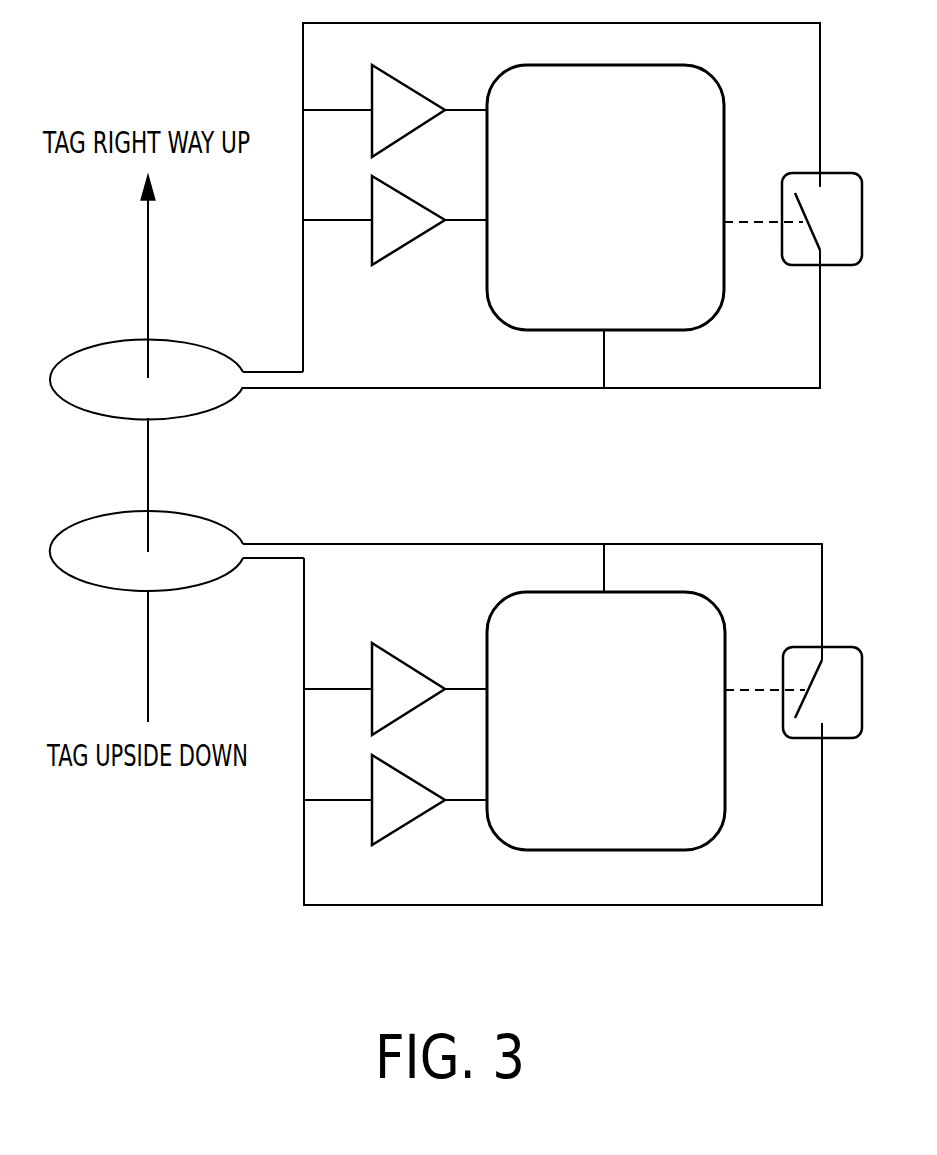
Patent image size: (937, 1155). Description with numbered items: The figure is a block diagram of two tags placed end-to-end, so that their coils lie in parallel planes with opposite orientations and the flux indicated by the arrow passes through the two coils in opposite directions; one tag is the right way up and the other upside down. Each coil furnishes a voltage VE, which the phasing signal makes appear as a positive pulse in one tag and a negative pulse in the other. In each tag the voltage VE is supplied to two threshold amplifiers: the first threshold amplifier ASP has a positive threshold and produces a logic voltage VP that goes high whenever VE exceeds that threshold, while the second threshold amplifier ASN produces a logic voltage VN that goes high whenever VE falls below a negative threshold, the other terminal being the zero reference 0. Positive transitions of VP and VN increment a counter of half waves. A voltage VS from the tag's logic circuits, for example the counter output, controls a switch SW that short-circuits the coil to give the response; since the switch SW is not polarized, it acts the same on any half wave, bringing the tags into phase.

The ground/zero reference terminal 0 is at (604, 461).
The voltage furnished by the coil VE is at (177, 466).
The first threshold amplifier ASP is at (408, 400).
The second threshold amplifier ASN is at (408, 510).
The logic voltage VP is at (512, 454).
The logic voltage VN is at (513, 455).
The voltage controlling the switch VS is at (744, 454).
The switch SW is at (821, 456).